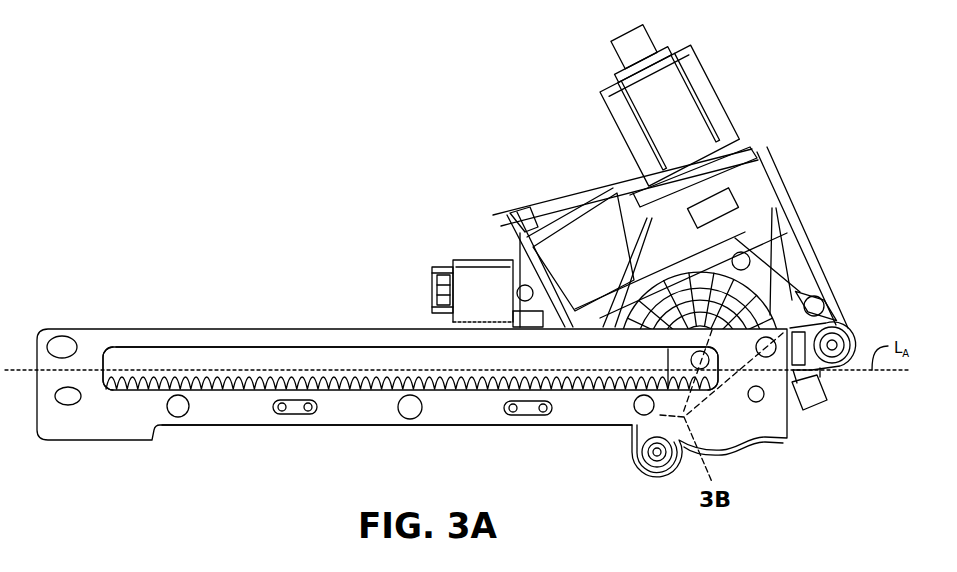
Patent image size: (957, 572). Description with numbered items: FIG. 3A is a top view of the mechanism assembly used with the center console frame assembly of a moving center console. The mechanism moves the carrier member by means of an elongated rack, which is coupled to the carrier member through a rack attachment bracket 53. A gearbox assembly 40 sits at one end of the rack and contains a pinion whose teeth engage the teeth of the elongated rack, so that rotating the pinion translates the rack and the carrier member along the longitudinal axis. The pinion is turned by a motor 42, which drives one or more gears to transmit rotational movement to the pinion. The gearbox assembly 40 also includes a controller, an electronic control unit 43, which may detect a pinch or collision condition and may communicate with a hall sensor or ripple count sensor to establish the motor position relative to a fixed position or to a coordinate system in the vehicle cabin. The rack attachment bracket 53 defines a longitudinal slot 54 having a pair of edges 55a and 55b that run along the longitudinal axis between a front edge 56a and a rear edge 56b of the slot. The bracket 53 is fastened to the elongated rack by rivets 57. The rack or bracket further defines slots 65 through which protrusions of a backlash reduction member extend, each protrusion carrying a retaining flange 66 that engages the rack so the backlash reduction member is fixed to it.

The gearbox assembly 40 is at (796, 173).
The motor 42 is at (608, 122).
The electronic control unit 43 is at (483, 256).
The rack attachment bracket 53 is at (93, 350).
The longitudinal slot 54 is at (163, 347).
The edge 55a is at (330, 344).
The edge 55b is at (245, 392).
The front edge 56a is at (108, 392).
The rear edge 56b is at (712, 394).
The rivets 57 is at (176, 407).
The slots 65 is at (305, 428).
The retaining flange 66 is at (295, 414).